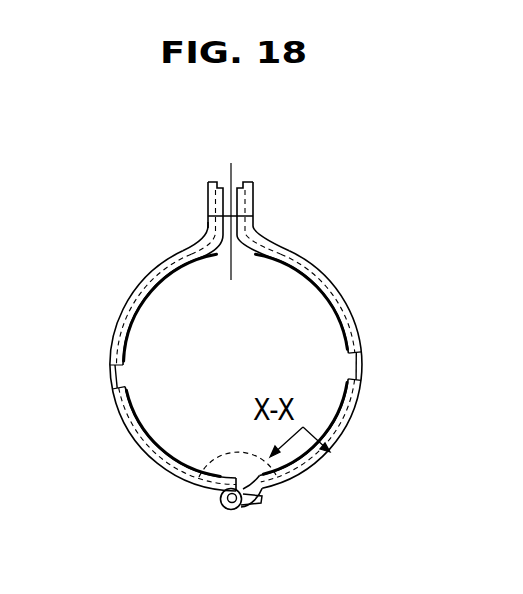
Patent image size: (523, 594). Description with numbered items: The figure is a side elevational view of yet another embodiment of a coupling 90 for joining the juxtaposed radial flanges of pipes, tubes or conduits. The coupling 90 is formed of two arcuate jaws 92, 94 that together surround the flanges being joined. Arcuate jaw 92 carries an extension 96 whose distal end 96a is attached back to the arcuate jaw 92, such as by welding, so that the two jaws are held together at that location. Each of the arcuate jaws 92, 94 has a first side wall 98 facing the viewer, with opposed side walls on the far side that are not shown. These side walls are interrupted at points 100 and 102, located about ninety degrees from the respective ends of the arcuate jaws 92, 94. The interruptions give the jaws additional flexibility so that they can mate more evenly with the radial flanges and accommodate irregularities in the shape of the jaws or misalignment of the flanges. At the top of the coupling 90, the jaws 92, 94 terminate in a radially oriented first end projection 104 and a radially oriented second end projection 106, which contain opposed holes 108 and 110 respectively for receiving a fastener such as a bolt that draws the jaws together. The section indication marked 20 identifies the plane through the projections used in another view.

The coupling 90 is at (332, 265).
The arcuate jaw 92 is at (351, 304).
The arcuate jaw 94 is at (110, 333).
The extension 96 is at (244, 504).
The distal end 96a is at (263, 495).
The first side walls 98 is at (157, 301).
The interruption point 100 is at (361, 359).
The interruption point 102 is at (110, 385).
The first end projection 104 is at (253, 188).
The second end projection 106 is at (208, 189).
The hole 108 is at (253, 216).
The hole 110 is at (208, 226).
The section line 20- 20 is at (259, 272).